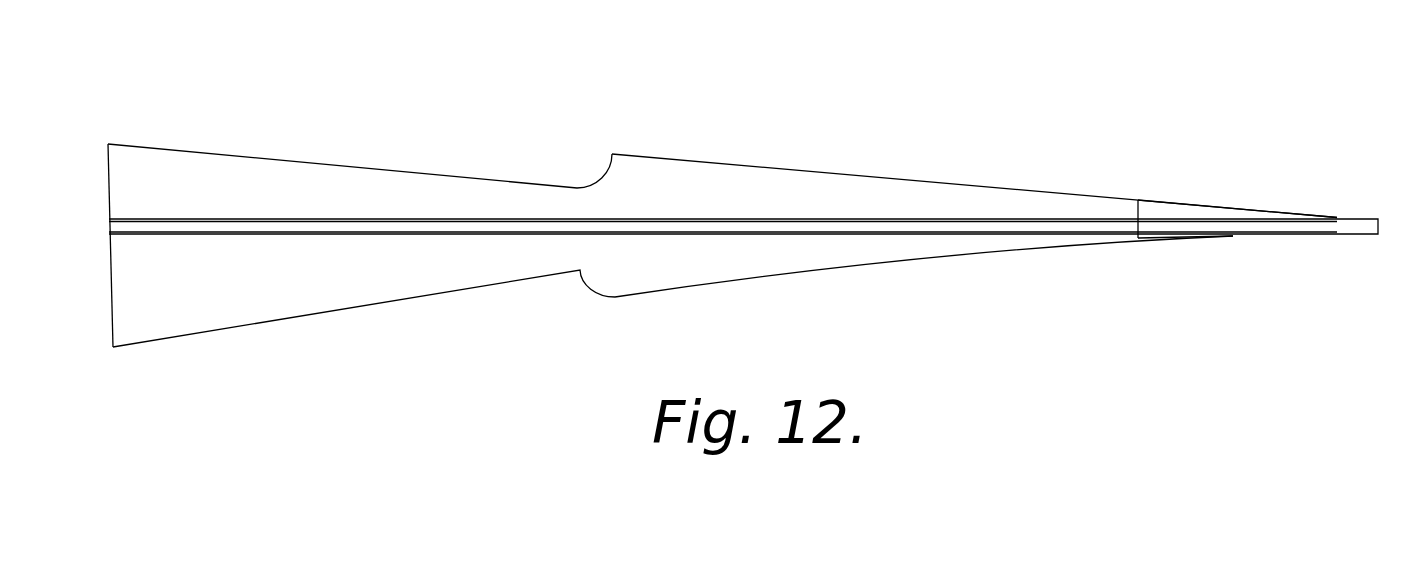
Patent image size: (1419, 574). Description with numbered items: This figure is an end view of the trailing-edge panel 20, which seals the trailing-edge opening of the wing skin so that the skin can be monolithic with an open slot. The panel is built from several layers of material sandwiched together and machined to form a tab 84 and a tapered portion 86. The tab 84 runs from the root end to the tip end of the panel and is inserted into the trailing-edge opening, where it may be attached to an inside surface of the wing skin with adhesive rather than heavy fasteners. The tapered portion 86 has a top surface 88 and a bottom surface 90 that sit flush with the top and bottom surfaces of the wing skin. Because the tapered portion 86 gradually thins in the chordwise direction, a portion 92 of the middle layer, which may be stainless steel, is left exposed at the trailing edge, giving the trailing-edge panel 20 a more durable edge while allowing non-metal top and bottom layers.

The trailing-edge panel 20 is at (763, 187).
The tab 84 is at (285, 161).
The tapered portion 86 is at (1073, 196).
The top surface 88 is at (758, 168).
The bottom surface 90 is at (885, 264).
The exposed portion of the middle layer 92 is at (1342, 233).